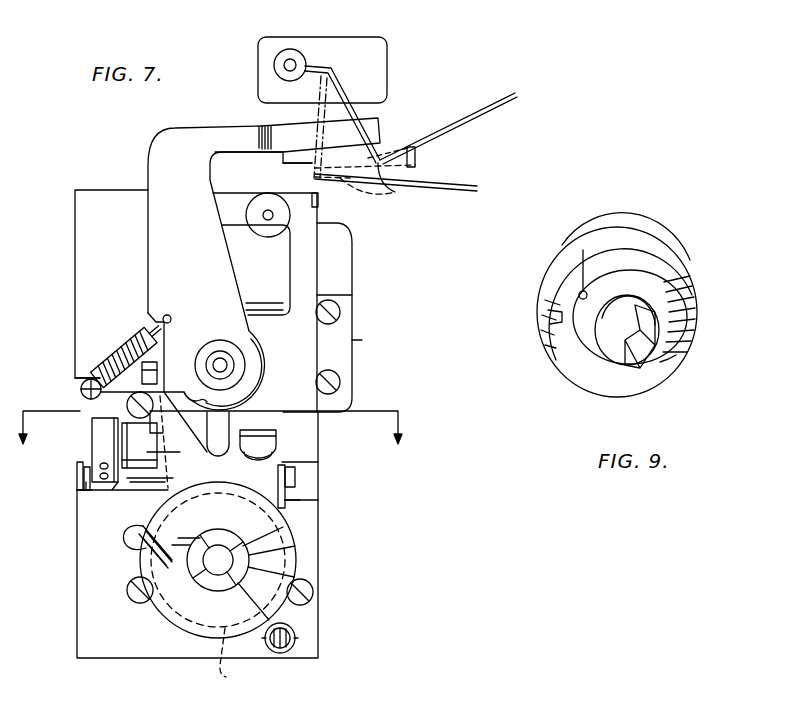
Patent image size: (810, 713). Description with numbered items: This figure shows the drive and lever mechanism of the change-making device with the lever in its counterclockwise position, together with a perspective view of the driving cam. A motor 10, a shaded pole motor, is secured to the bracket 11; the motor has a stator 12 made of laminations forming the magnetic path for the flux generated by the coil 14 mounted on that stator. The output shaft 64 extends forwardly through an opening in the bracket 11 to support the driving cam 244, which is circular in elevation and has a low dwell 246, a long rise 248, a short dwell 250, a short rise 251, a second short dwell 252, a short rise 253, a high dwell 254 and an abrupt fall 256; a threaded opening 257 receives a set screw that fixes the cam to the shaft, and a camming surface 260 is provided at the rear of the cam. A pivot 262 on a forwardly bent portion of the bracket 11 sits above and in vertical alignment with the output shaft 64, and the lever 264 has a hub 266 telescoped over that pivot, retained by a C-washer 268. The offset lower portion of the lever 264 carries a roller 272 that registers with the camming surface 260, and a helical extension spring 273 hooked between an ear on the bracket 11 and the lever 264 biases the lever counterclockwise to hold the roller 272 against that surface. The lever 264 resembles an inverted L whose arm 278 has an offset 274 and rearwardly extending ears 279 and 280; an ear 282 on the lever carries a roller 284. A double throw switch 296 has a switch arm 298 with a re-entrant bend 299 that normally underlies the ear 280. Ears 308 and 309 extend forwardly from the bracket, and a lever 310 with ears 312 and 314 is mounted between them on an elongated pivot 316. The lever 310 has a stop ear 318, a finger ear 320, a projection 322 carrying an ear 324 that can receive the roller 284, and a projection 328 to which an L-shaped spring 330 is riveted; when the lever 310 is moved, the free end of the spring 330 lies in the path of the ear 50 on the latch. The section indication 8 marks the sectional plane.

In FIG. 7, the section line 8- 8 is at (210, 441).
In FIG. 7, the motor 10 is at (390, 351).
In FIG. 7, the bracket 11 is at (313, 205).
In FIG. 7, the stator 12 is at (348, 300).
In FIG. 7, the coil 14 is at (266, 267).
In FIG. 7, the ear 50 is at (83, 450).
In FIG. 7, the output shaft 64 is at (238, 587).
In FIG. 7, the driving cam 244 is at (167, 617).
In FIG. 9, the driving cam 244 is at (742, 266).
In FIG. 9, the low dwell 246 is at (560, 280).
In FIG. 9, the long rise 248 is at (637, 255).
In FIG. 9, the short dwell 250 is at (687, 295).
In FIG. 9, the short rise 251 is at (692, 316).
In FIG. 9, the second short dwell 252 is at (688, 335).
In FIG. 9, the short rise 253 is at (676, 355).
In FIG. 9, the high dwell 254 is at (615, 388).
In FIG. 9, the abrupt fall 256 is at (553, 318).
In FIG. 9, the threaded opening 257 is at (583, 290).
In FIG. 7, the camming surface 260 is at (243, 660).
In FIG. 7, the pivot 262 is at (230, 367).
In FIG. 7, the lever 264 is at (213, 277).
In FIG. 7, the hub 266 is at (228, 342).
In FIG. 7, the C-washer 268 is at (233, 357).
In FIG. 7, the roller 272 is at (140, 557).
In FIG. 7, the helical extension spring 273 is at (137, 333).
In FIG. 7, the offset 274 is at (255, 141).
In FIG. 7, the arm 278 is at (236, 127).
In FIG. 7, the ear 279 is at (283, 162).
In FIG. 7, the ear 280 is at (380, 125).
In FIG. 7, the ear 282 is at (160, 365).
In FIG. 7, the roller 284 is at (80, 368).
In FIG. 7, the double throw switch 296 is at (377, 42).
In FIG. 7, the switch arm 298 is at (512, 93).
In FIG. 7, the re-entrant bend 299 is at (382, 187).
In FIG. 7, the ear 308 is at (82, 488).
In FIG. 7, the ear 309 is at (292, 498).
In FIG. 7, the lever 310 is at (117, 491).
In FIG. 7, the ear 312 is at (88, 493).
In FIG. 7, the ear 314 is at (297, 462).
In FIG. 7, the elongated pivot 316 is at (75, 478).
In FIG. 7, the ear 318 is at (226, 418).
In FIG. 7, the ear 320 is at (288, 441).
In FIG. 7, the projection 322 is at (206, 399).
In FIG. 7, the ear 324 is at (81, 389).
In FIG. 7, the projection 328 is at (122, 443).
In FIG. 7, the spring 330 is at (86, 413).